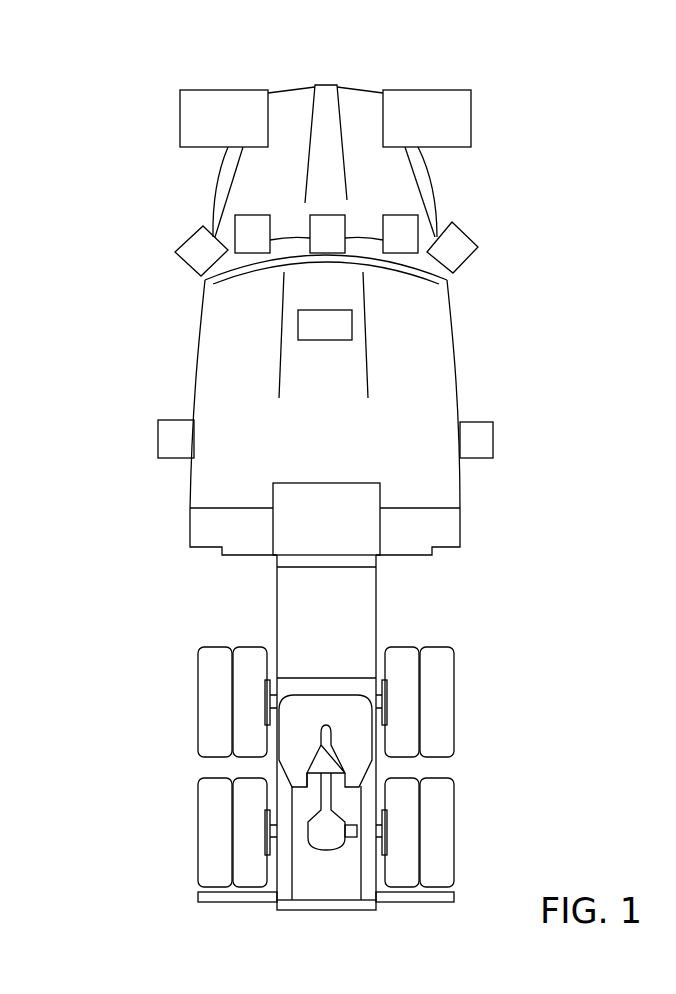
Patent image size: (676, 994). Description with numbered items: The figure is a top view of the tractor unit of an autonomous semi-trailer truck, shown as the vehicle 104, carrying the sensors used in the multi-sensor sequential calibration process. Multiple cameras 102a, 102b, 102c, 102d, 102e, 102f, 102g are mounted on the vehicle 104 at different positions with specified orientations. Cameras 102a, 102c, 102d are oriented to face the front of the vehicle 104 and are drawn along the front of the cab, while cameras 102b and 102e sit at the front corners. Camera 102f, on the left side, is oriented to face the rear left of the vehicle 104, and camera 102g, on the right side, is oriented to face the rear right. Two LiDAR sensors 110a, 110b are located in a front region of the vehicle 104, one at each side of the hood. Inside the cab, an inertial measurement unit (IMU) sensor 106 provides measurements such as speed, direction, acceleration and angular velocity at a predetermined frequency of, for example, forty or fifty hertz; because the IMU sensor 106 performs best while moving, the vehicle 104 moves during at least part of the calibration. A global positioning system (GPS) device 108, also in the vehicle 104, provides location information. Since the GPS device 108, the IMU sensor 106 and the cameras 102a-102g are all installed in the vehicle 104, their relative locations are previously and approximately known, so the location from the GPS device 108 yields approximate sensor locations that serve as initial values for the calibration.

The vehicle 104 is at (100, 81).
The LiDAR sensor 110a is at (220, 90).
The LiDAR sensor 110b is at (426, 90).
The camera 102a is at (400, 215).
The camera 102b is at (466, 228).
The camera 102c is at (252, 215).
The camera 102d is at (327, 215).
The camera 102e is at (178, 232).
The camera 102f is at (158, 437).
The camera 102g is at (493, 438).
The inertial measurement unit (IMU) sensor 106 is at (315, 483).
The global positioning system (GPS) device 108 is at (337, 342).